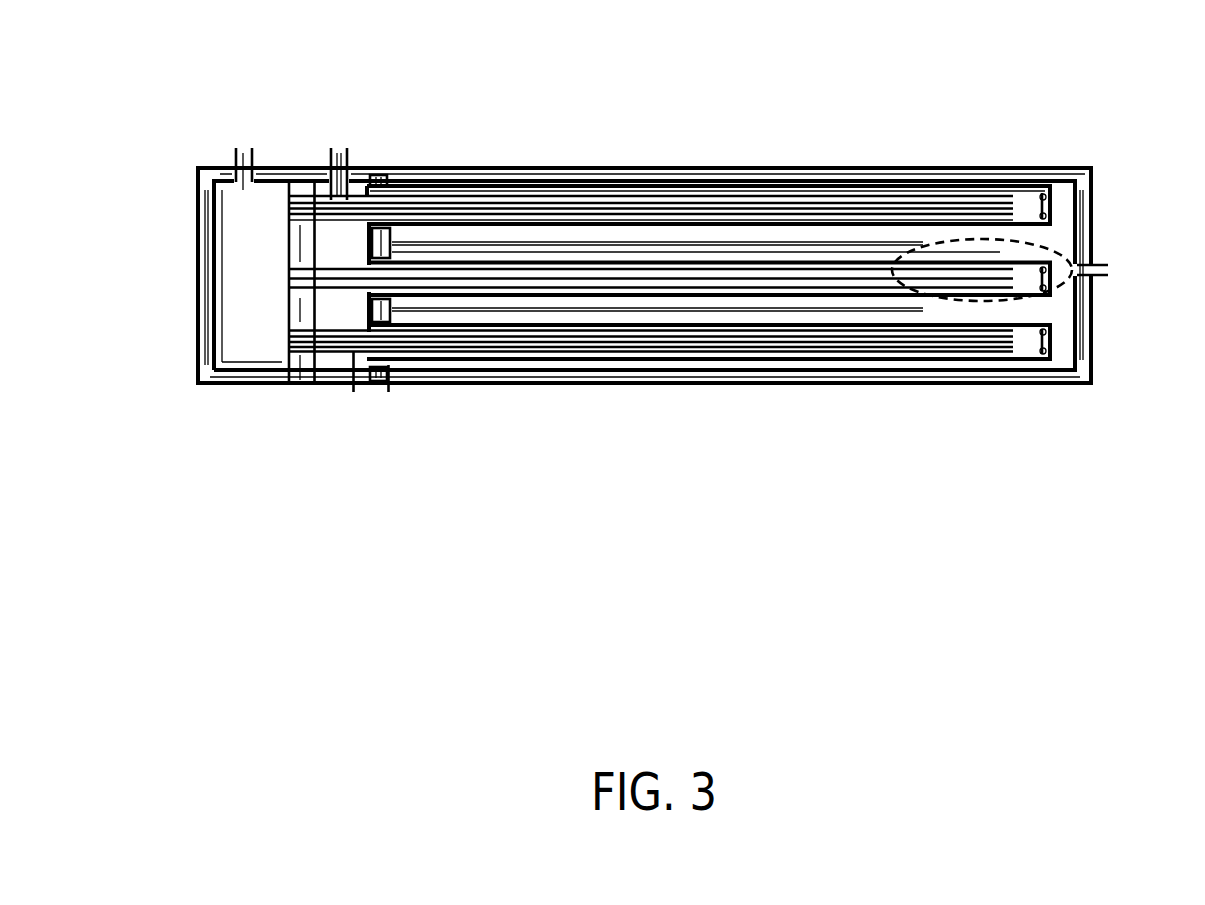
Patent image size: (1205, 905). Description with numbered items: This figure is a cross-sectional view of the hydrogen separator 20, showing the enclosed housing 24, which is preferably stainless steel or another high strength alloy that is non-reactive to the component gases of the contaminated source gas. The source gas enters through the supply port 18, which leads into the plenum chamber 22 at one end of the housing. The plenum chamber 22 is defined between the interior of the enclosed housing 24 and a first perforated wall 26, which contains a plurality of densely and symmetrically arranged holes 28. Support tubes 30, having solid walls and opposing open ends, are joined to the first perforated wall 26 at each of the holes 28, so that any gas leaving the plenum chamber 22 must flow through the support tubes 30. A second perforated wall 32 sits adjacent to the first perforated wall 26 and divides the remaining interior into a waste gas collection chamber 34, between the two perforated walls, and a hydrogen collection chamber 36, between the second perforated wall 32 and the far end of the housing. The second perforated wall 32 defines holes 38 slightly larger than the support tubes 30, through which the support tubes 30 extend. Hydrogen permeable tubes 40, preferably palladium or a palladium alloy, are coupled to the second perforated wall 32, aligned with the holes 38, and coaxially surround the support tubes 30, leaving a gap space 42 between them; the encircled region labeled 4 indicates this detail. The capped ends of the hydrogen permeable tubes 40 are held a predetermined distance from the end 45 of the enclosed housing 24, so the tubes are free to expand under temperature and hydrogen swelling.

The detail region 4 is at (1058, 240).
The supply port 18 is at (256, 152).
The hydrogen separator 20 is at (738, 66).
The plenum chamber 22 is at (233, 297).
The enclosed housing 24 is at (524, 158).
The first perforated wall 26 is at (290, 385).
The holes 28 is at (312, 385).
The support tubes 30 is at (352, 352).
The second perforated wall 32 is at (390, 384).
The waste gas collection chamber 34 is at (334, 234).
The hydrogen collection chamber 36 is at (690, 318).
The holes 38 is at (388, 178).
The hydrogen permeable tubes 40 is at (800, 372).
The gap space 42 is at (962, 355).
The end 45 is at (1072, 342).